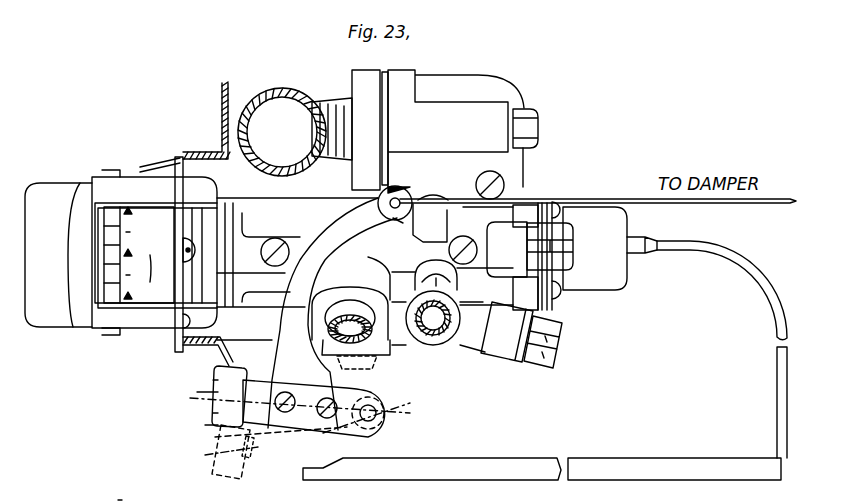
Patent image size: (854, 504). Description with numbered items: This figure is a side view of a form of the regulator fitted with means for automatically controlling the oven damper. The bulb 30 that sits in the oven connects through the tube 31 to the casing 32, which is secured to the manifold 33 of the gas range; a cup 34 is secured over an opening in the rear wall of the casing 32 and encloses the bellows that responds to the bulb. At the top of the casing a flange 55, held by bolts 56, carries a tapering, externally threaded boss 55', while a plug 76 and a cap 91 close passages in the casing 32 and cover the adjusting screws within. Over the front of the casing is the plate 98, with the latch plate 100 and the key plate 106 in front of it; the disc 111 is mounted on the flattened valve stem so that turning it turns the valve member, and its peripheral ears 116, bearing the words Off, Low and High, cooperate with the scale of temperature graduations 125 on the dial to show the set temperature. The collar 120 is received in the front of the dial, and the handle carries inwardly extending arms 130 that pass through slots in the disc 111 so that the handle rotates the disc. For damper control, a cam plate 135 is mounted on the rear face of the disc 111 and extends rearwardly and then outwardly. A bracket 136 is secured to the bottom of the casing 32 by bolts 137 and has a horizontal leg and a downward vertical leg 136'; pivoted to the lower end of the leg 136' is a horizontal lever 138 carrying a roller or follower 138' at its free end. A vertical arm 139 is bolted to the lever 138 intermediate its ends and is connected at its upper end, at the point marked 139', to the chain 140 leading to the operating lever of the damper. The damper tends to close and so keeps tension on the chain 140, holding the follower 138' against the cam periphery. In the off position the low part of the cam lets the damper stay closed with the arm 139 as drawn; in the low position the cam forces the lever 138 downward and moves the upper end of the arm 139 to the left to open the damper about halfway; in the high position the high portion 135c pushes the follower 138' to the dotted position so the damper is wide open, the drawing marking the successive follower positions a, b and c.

The collar 120 is at (62, 175).
The arms 130 is at (102, 322).
The scale of temperature graduations 125 is at (145, 212).
The disc 111 is at (176, 292).
The key plate 106 is at (182, 350).
The latch plate 100 is at (206, 205).
The ears 116 is at (162, 162).
The cam plate 135 is at (226, 86).
The manifold 33 is at (282, 88).
The boss 55' is at (307, 129).
The flange 55 is at (351, 125).
The bolts 56 is at (532, 120).
The plate 98 is at (226, 210).
The pivot 139' is at (490, 181).
The vertical arm 139 is at (332, 302).
The chain 140 is at (638, 198).
The plug 76 is at (562, 226).
The bracket 136 is at (384, 332).
The bolts 137 is at (380, 367).
The vertical leg 136' is at (394, 379).
The casing 32 is at (478, 312).
The cap 91 is at (540, 362).
The cup 34 is at (608, 288).
The tube 31 is at (770, 302).
The bulb 30 is at (606, 456).
The horizontal lever 138 is at (300, 423).
The follower 138' is at (193, 422).
The position a is at (202, 390).
The position b is at (206, 423).
The position c is at (225, 455).
The high portion 135c is at (103, 494).